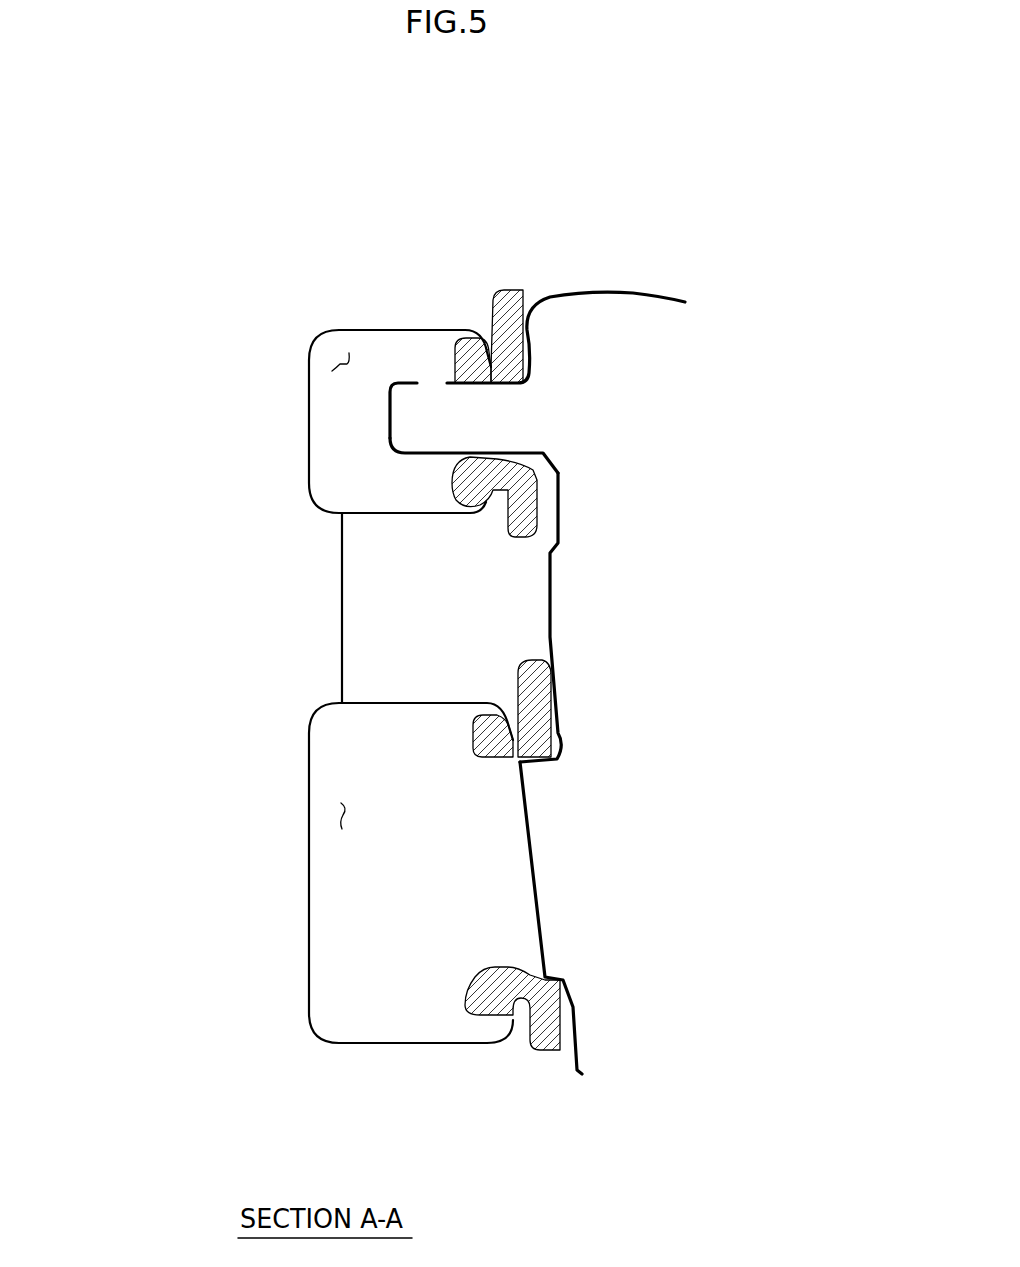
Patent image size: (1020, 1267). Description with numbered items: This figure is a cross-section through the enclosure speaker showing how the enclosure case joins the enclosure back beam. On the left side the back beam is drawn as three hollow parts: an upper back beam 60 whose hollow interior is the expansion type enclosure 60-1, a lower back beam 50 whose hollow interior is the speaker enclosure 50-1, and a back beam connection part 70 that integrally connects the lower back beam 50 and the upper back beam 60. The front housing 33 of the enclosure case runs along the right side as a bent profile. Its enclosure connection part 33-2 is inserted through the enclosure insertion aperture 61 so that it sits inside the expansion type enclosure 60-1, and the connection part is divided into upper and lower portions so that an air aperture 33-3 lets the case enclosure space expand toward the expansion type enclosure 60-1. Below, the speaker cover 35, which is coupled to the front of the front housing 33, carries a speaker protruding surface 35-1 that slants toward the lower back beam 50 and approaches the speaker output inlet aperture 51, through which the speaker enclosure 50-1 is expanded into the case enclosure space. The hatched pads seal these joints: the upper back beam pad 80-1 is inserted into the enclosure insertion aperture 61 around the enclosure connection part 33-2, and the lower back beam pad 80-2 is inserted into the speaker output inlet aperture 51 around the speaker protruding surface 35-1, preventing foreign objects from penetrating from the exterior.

The front housing 33 is at (640, 293).
The enclosure connection part 33-2 is at (455, 453).
The air aperture 33-3 is at (430, 382).
The speaker cover 35 is at (552, 628).
The speaker protruding surface 35-1 is at (533, 878).
The lower back beam 50 is at (308, 875).
The speaker enclosure 50-1 is at (343, 813).
The speaker output inlet aperture 51 is at (495, 742).
The upper back beam 60 is at (308, 423).
The expansion type enclosure 60-1 is at (342, 360).
The enclosure insertion aperture 61 is at (490, 497).
The back beam connection part 70 is at (340, 608).
The upper back beam pad 80-1 is at (512, 295).
The lower back beam pad 80-2 is at (545, 1027).